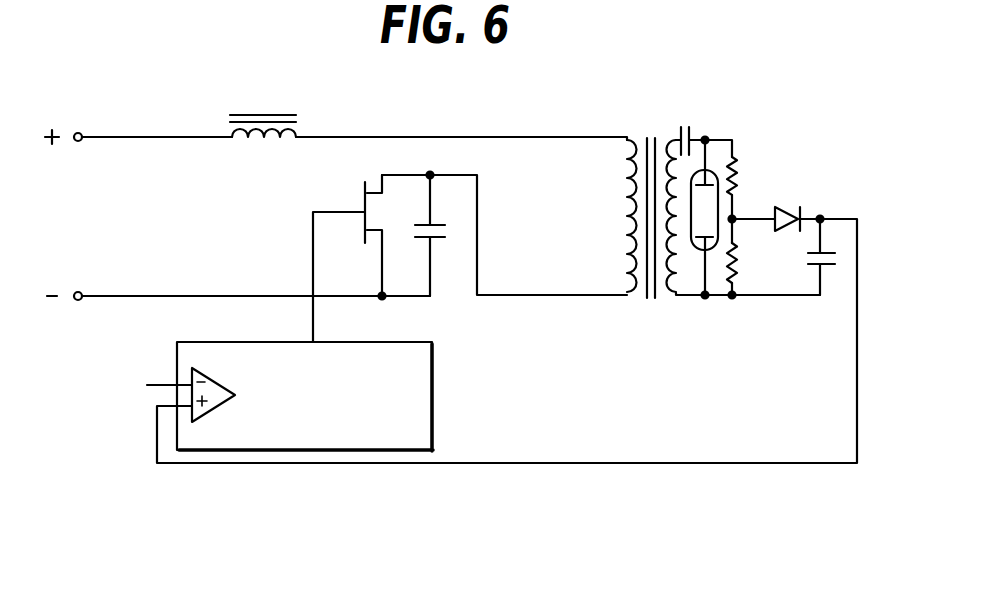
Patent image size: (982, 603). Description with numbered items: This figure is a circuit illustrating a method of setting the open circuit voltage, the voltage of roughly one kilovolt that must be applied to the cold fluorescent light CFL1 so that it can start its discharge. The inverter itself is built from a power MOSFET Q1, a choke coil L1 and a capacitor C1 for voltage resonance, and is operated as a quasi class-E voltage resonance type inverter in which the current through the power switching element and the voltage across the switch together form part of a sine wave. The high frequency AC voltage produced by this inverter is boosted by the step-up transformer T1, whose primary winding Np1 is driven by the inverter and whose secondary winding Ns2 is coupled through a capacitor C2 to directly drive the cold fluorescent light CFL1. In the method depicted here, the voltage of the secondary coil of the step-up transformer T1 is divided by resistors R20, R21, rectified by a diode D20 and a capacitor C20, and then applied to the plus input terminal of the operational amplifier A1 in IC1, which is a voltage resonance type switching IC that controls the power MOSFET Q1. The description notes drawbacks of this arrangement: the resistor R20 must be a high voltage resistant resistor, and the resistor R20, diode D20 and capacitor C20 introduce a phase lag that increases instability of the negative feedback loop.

The choke coil L1 is at (263, 105).
The power MOSFET Q1 is at (347, 255).
The capacitor for voltage resonance C1 is at (442, 235).
The step-up transformer T1 is at (652, 222).
The primary winding Np1 is at (616, 241).
The secondary winding Ns2 is at (688, 241).
The capacitor C2 is at (690, 104).
The cold fluorescent light CFL1 is at (728, 198).
The resistor R20 is at (762, 171).
The resistor R21 is at (761, 266).
The diode D20 is at (796, 205).
The capacitor C20 is at (833, 264).
The voltage resonance type switching IC IC1 is at (290, 440).
The operational amplifier A1 is at (215, 403).